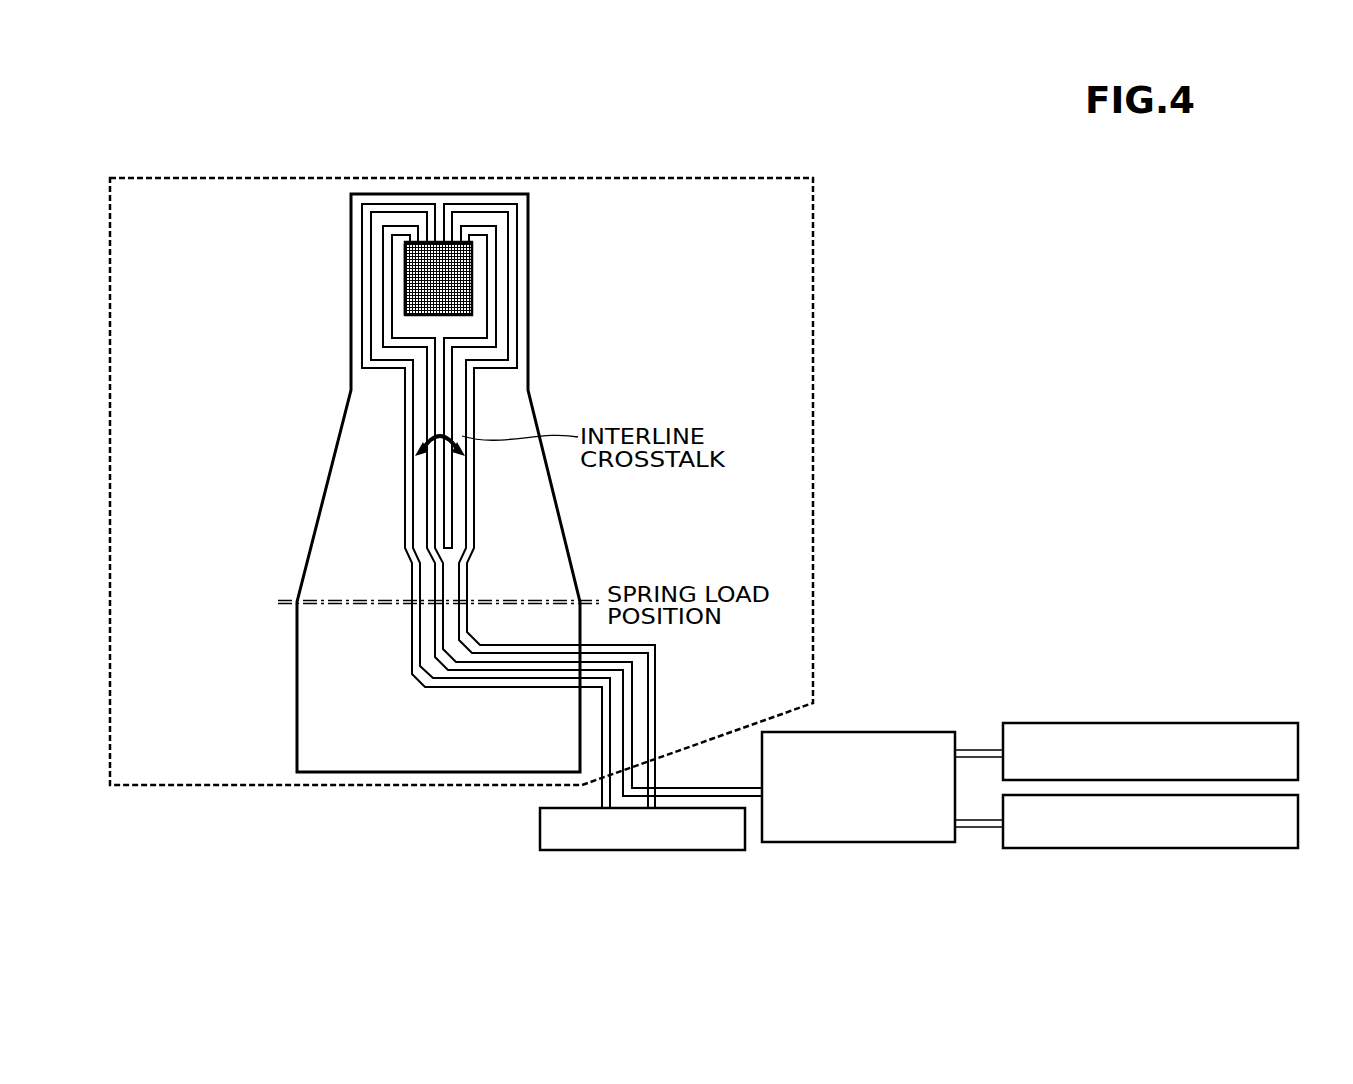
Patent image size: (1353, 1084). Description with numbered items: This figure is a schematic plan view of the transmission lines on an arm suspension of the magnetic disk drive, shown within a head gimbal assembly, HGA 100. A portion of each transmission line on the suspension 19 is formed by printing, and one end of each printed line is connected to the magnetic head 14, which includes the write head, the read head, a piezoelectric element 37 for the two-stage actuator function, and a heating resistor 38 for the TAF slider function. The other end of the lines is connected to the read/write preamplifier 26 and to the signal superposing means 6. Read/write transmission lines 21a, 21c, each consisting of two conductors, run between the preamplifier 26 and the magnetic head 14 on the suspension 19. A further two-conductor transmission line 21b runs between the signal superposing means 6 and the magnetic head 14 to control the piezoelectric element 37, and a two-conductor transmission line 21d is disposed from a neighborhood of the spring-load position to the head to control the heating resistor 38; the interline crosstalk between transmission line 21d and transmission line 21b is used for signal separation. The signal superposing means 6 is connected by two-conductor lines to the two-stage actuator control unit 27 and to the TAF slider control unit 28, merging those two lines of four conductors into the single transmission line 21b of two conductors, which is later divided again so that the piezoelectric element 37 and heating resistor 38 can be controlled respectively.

The head gimbal assembly (HGA) 100 is at (822, 257).
The suspension 19 is at (362, 440).
The piezoelectric element 37 is at (412, 243).
The heating resistor 38 is at (472, 243).
The magnetic head 14 is at (442, 289).
The read/write transmission line 21a is at (405, 497).
The transmission line 21b is at (428, 535).
The read/write transmission line 21c is at (468, 508).
The transmission line 21d is at (447, 548).
The preamplifier 26 is at (540, 832).
The signal superposing means 6 is at (862, 732).
The two-stage actuator control unit 27 is at (1227, 723).
The TAF slider control unit 28 is at (1220, 850).